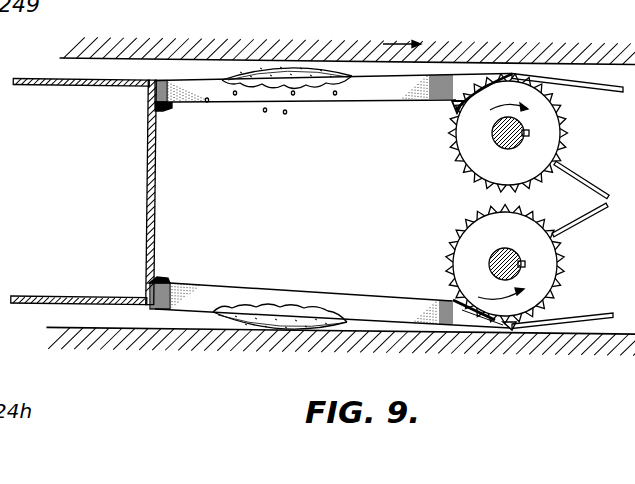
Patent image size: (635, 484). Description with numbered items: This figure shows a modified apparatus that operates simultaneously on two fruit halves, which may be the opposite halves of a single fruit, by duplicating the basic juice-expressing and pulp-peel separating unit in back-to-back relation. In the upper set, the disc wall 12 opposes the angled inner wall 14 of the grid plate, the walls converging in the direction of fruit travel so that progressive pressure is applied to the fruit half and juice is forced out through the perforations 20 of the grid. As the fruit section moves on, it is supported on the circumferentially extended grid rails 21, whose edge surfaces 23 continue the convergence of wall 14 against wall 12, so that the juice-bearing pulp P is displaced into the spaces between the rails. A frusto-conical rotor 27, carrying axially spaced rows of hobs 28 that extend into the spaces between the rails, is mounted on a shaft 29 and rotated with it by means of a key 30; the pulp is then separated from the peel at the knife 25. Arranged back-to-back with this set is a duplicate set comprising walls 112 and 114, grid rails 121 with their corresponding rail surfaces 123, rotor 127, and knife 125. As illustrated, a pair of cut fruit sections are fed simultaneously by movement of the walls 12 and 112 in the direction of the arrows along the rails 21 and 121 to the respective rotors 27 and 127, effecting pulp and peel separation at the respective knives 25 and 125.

The disc wall 12 is at (132, 58).
The inner wall 14 is at (87, 80).
The perforations 20 is at (35, 84).
The grid rails 21 is at (263, 100).
The edge surfaces 23 is at (182, 78).
The juice-bearing pulp P is at (312, 83).
The knife 25 is at (602, 88).
The rotor 27 is at (501, 139).
The hobs 28 is at (452, 126).
The shaft 29 is at (497, 140).
The key 30 is at (529, 136).
The duplicate disc wall 112 is at (127, 328).
The duplicate inner wall 114 is at (109, 276).
The duplicate grid rails 121 is at (196, 286).
The lower channel surface 123 is at (389, 283).
The duplicate knife 125 is at (582, 317).
The duplicate rotor 127 is at (562, 262).